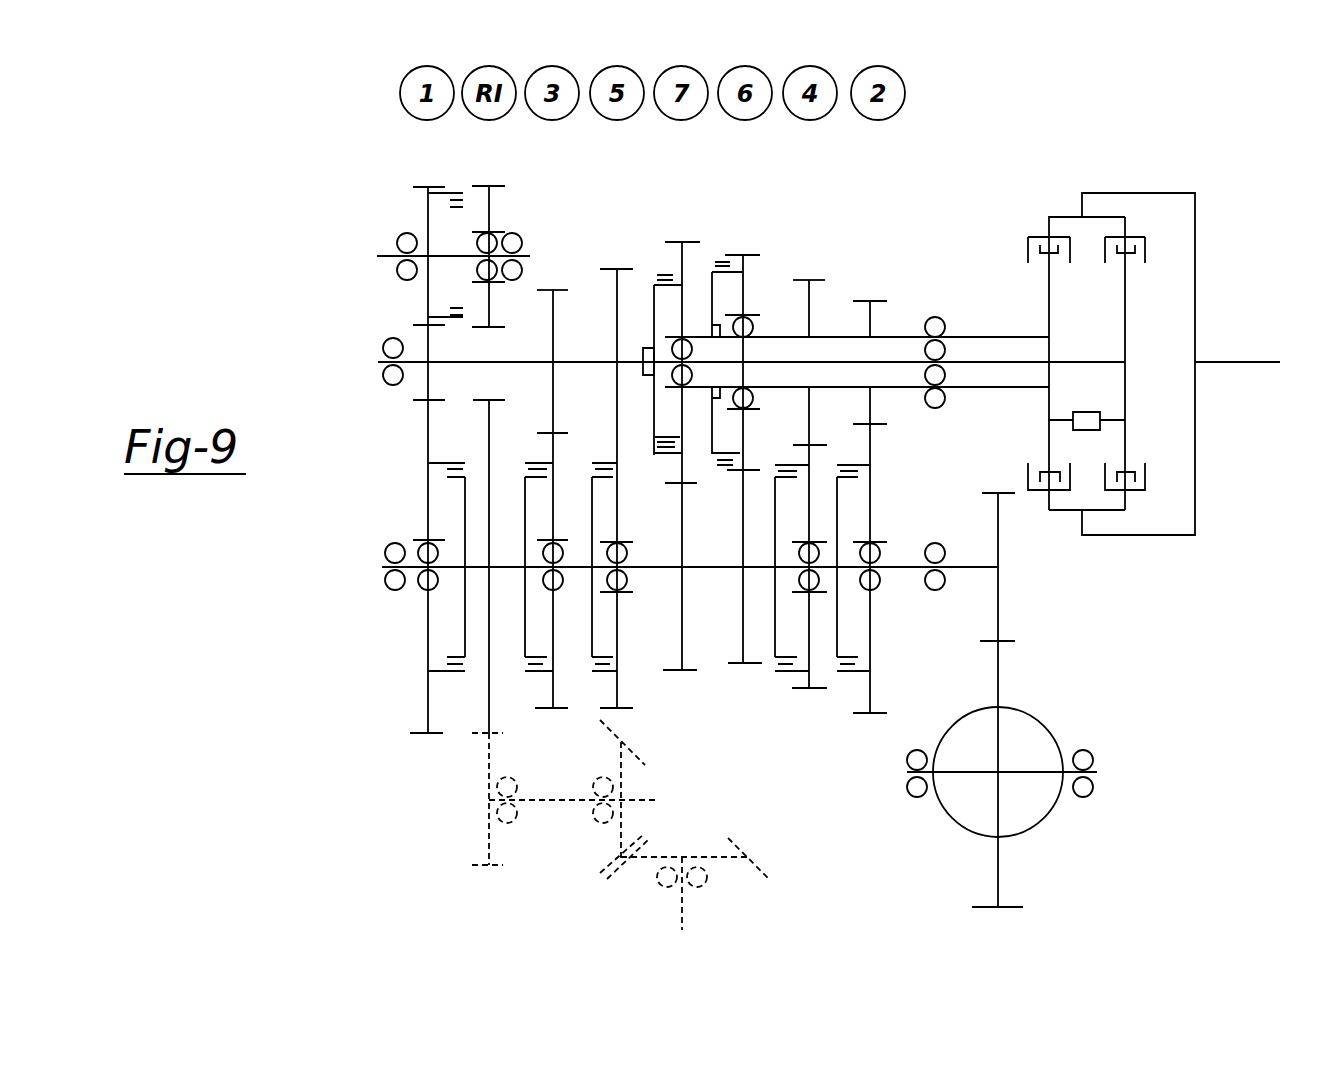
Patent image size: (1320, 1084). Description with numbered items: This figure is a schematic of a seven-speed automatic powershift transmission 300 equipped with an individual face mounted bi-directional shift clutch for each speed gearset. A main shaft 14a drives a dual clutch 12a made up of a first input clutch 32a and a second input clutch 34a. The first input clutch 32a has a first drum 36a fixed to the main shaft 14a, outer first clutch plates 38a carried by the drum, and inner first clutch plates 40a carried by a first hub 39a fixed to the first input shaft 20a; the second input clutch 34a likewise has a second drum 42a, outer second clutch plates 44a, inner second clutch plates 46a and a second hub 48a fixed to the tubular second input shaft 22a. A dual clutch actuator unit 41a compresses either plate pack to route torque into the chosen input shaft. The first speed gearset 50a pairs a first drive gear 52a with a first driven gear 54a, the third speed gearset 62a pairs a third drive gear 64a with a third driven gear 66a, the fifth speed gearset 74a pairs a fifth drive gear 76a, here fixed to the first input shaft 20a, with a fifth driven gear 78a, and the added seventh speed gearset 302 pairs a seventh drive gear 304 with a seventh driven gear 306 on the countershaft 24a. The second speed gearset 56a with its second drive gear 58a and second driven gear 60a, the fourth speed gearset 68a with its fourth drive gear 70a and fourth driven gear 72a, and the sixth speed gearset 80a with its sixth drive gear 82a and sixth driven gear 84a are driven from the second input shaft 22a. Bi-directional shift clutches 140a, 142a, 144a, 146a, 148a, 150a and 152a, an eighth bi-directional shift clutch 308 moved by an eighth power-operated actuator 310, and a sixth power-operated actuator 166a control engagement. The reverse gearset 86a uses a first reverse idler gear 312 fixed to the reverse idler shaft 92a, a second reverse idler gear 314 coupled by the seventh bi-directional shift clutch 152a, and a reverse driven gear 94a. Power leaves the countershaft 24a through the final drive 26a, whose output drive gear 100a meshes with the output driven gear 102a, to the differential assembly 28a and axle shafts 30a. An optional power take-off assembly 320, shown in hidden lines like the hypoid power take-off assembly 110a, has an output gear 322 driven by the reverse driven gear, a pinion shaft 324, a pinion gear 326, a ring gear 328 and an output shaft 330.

The seven-speed automatic powershift transmission 300 is at (271, 163).
The dual clutch 12a is at (1135, 187).
The main shaft 14a is at (1228, 363).
The first input shaft 20a is at (1117, 362).
The second input shaft 22a is at (1007, 337).
The countershaft 24a is at (975, 572).
The final drive 26a is at (1027, 610).
The differential assembly 28a is at (1043, 832).
The axle shafts 30a is at (1010, 772).
The first input clutch 32a is at (1158, 243).
The second input clutch 34a is at (1018, 225).
The first drum 36a is at (1138, 233).
The outer first clutch plates 38a is at (1140, 248).
The first hub 39a is at (1127, 323).
The inner first clutch plates 40a is at (1112, 252).
The dual clutch actuator unit 41a is at (1103, 388).
The second drum 42a is at (1035, 237).
The outer second clutch plates 44a is at (1028, 242).
The inner second clutch plates 46a is at (1058, 247).
The second hub 48a is at (1048, 270).
The first speed gearset 50a is at (415, 172).
The first drive gear 52a is at (428, 395).
The first driven gear 54a is at (428, 436).
The second speed gearset 56a is at (875, 278).
The second drive gear 58a is at (868, 323).
The second driven gear 60a is at (872, 437).
The third speed gearset 62a is at (547, 280).
The third drive gear 64a is at (553, 300).
The third driven gear 66a is at (553, 441).
The fourth speed gearset 68a is at (818, 253).
The fourth drive gear 70a is at (805, 323).
The fourth driven gear 72a is at (807, 448).
The fifth speed gearset 74a is at (615, 250).
The fifth drive gear 76a is at (617, 287).
The fifth driven gear 78a is at (647, 623).
The sixth speed gearset 80a is at (755, 232).
The sixth drive gear 82a is at (745, 282).
The sixth driven gear 84a is at (743, 548).
The reverse gearset 86a is at (490, 170).
The reverse idler shaft 92a is at (377, 256).
The reverse driven gear 94a is at (489, 436).
The output drive gear 100a is at (997, 515).
The output driven gear 102a is at (998, 663).
The hypoid power take-off assembly 110a is at (396, 769).
The first bi-directional shift clutch 140a is at (459, 677).
The second bi-directional shift clutch 142a is at (842, 677).
The third bi-directional shift clutch 144a is at (522, 677).
The fourth bi-directional shift clutch 146a is at (778, 673).
The fifth bi-directional shift clutch 148a is at (585, 677).
The sixth bi-directional shift clutch 150a is at (708, 252).
The seventh bi-directional shift clutch 152a is at (443, 330).
The sixth power-operated actuator 166a is at (717, 392).
The seventh speed gearset 302 is at (685, 223).
The seventh drive gear 304 is at (686, 317).
The seventh driven gear 306 is at (712, 550).
The eighth bi-directional shift clutch 308 is at (655, 462).
The eighth power-operated actuator 310 is at (643, 347).
The first reverse idler gear 312 is at (427, 217).
The second reverse idler gear 314 is at (490, 196).
The power take-off assembly 320 is at (695, 758).
The output gear 322 is at (488, 843).
The pinion shaft 324 is at (545, 803).
The pinion gear 326 is at (622, 775).
The ring gear 328 is at (738, 847).
The output shaft 330 is at (682, 913).